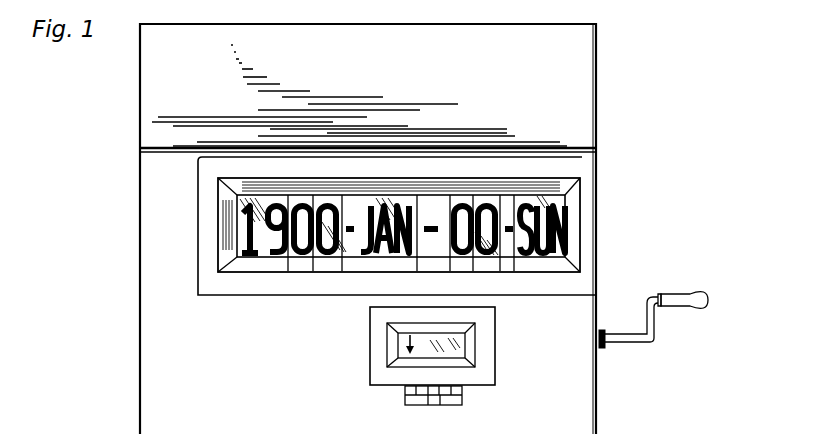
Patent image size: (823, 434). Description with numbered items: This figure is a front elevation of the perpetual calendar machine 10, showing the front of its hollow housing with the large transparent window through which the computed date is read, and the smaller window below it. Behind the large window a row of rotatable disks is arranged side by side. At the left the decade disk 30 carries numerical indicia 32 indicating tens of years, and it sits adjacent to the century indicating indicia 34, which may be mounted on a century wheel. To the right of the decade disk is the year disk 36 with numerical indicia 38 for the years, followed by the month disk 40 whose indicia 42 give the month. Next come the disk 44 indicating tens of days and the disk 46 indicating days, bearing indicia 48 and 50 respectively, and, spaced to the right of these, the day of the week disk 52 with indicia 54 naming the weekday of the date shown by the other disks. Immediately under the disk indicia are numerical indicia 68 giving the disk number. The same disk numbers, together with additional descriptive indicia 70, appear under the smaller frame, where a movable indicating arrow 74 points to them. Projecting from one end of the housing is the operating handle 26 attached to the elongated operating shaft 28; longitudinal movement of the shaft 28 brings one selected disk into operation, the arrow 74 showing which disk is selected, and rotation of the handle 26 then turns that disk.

The perpetual calendar machine 10 is at (139, 324).
The operating handle 26 is at (690, 308).
The operating shaft 28 is at (615, 344).
The decade disk 30 is at (298, 253).
The numerical indicia 32 is at (300, 207).
The century indicating indicia 34 is at (254, 253).
The year disk 36 is at (334, 253).
The numerical indicia 38 is at (330, 205).
The month disk 40 is at (389, 206).
The indicia 42 is at (371, 204).
The disk indicating tens of days 44 is at (463, 205).
The disk indicating days 46 is at (490, 204).
The indicia 48 is at (457, 254).
The indicia 50 is at (497, 258).
The day of the week disk 52 is at (537, 204).
The indicia 54 is at (557, 252).
The numerical indicia 68 is at (305, 262).
The descriptive indicia 70 is at (457, 404).
The indicating arrow 74 is at (406, 338).